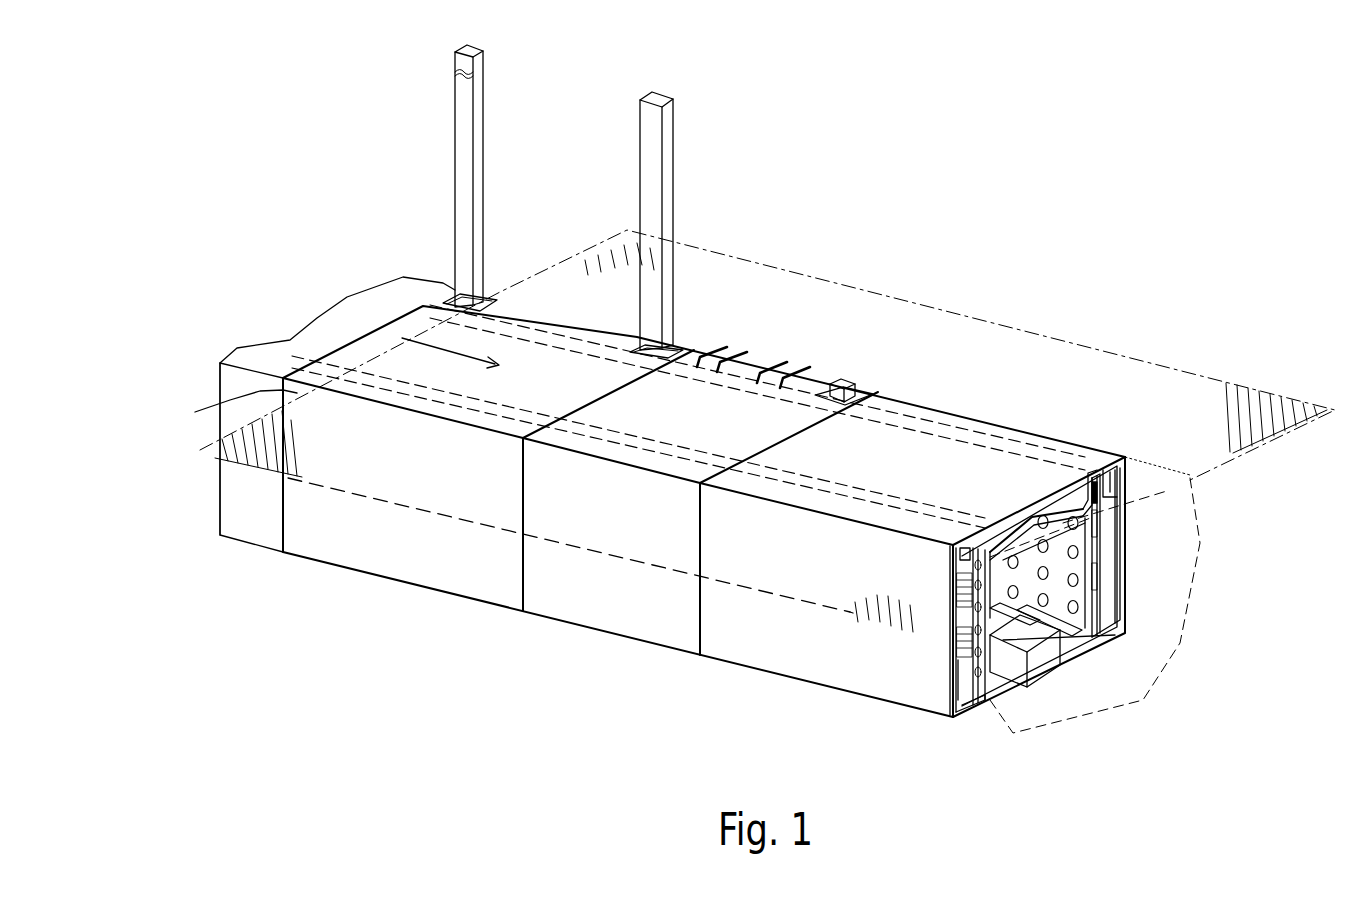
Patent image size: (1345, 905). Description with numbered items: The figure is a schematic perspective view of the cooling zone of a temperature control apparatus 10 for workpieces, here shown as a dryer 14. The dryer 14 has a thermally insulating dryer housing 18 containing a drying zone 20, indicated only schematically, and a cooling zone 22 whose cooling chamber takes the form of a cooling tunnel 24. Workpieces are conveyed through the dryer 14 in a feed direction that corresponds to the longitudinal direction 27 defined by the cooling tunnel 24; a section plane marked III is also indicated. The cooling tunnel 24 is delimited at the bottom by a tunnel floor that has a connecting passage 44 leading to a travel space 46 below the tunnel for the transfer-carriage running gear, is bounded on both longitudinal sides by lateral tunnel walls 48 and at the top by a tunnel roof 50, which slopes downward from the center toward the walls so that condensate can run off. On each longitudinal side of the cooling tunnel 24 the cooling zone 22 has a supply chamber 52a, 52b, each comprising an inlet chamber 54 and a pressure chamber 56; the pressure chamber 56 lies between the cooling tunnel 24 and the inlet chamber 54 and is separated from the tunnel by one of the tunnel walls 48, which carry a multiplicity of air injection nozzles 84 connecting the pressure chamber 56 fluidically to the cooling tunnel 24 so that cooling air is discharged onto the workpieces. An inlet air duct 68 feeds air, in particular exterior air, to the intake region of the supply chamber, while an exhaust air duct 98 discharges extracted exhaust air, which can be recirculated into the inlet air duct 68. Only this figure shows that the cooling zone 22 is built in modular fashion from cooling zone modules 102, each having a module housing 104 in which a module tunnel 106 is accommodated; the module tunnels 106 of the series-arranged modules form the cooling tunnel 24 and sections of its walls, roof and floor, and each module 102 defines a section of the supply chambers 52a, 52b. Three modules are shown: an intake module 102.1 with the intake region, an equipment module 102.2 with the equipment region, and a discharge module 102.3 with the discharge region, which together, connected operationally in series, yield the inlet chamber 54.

The temperature control apparatus 10 is at (1170, 163).
The section indicator III is at (800, 303).
The dryer 14 is at (345, 243).
The dryer housing 18 is at (256, 360).
The drying zone 20 is at (247, 528).
The cooling zone 22 is at (591, 612).
The cooling tunnel 24 is at (1080, 596).
The longitudinal direction 27 is at (424, 342).
The connecting passage 44 is at (1063, 632).
The travel space 46 is at (1052, 670).
The lateral tunnel walls 48 is at (1082, 560).
The tunnel roof 50 is at (1053, 507).
The supply chamber 52a is at (1118, 578).
The supply chamber 52b is at (960, 668).
The inlet chamber 54 is at (1117, 500).
The pressure chamber 56 is at (1094, 507).
The inlet air duct 68 is at (478, 102).
The air injection nozzles 84 is at (1068, 523).
The exhaust air duct 98 is at (665, 124).
The cooling zone modules 102 is at (409, 642).
The intake module 102.1 is at (331, 548).
The equipment module 102.2 is at (544, 602).
The discharge module 102.3 is at (739, 652).
The module housing 104 is at (290, 392).
The module tunnel 106 is at (1022, 540).